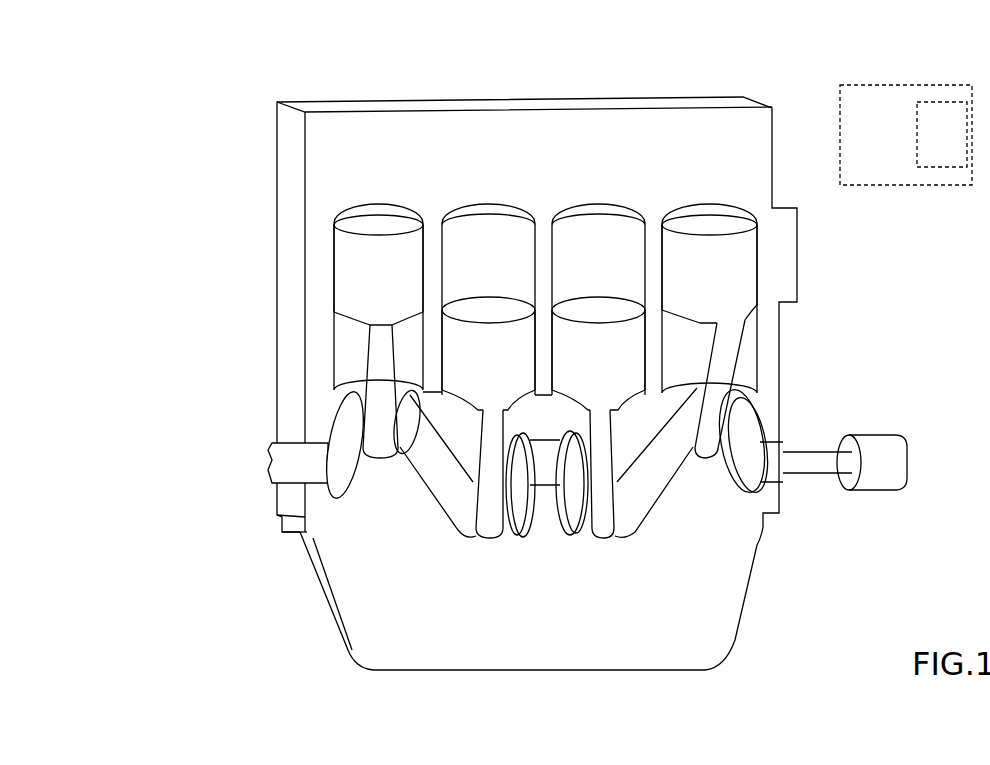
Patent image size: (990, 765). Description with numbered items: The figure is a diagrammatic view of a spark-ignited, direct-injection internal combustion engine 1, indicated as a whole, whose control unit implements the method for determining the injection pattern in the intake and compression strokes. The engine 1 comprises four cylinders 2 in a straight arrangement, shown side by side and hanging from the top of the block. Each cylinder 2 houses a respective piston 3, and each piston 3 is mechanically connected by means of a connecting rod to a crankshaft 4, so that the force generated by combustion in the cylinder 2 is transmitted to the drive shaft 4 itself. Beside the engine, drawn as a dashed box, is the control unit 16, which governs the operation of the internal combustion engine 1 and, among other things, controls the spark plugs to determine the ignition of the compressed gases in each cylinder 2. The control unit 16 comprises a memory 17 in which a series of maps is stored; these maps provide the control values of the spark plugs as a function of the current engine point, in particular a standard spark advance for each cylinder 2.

The internal combustion engine 1 is at (185, 148).
The cylinder 2 is at (487, 228).
The piston 3 is at (720, 280).
The crankshaft 4 is at (285, 458).
The control unit 16 is at (906, 135).
The memory 17 is at (942, 134).